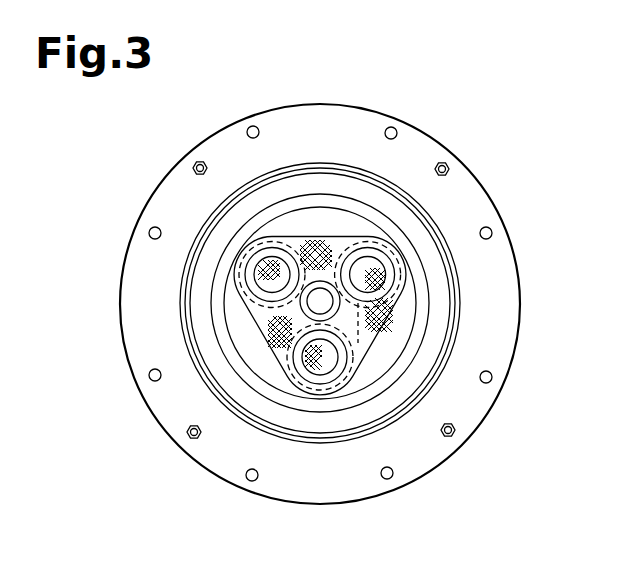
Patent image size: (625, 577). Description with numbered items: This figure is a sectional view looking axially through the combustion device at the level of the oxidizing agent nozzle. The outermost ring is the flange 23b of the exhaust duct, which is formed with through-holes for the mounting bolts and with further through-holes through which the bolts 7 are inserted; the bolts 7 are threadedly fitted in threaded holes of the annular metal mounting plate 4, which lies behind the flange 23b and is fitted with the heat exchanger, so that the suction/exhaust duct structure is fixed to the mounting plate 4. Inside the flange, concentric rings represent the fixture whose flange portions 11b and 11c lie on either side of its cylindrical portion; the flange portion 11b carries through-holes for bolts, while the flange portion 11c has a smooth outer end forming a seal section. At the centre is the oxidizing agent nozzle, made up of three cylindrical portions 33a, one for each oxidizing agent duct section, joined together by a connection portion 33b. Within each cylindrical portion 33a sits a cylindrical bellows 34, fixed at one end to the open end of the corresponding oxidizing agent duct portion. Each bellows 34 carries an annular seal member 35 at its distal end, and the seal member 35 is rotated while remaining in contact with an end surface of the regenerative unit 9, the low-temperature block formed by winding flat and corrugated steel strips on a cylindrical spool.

The mounting plate 4 is at (436, 268).
The bolt 7 is at (195, 162).
The regenerative unit 9 is at (183, 360).
The flange portion 11b is at (424, 322).
The flange portion 11c is at (378, 370).
The flange 23b is at (418, 145).
The cylindrical portion 33a is at (250, 276).
The connection portion 33b is at (262, 385).
The bellows 34 is at (250, 262).
The seal member 35 is at (270, 335).